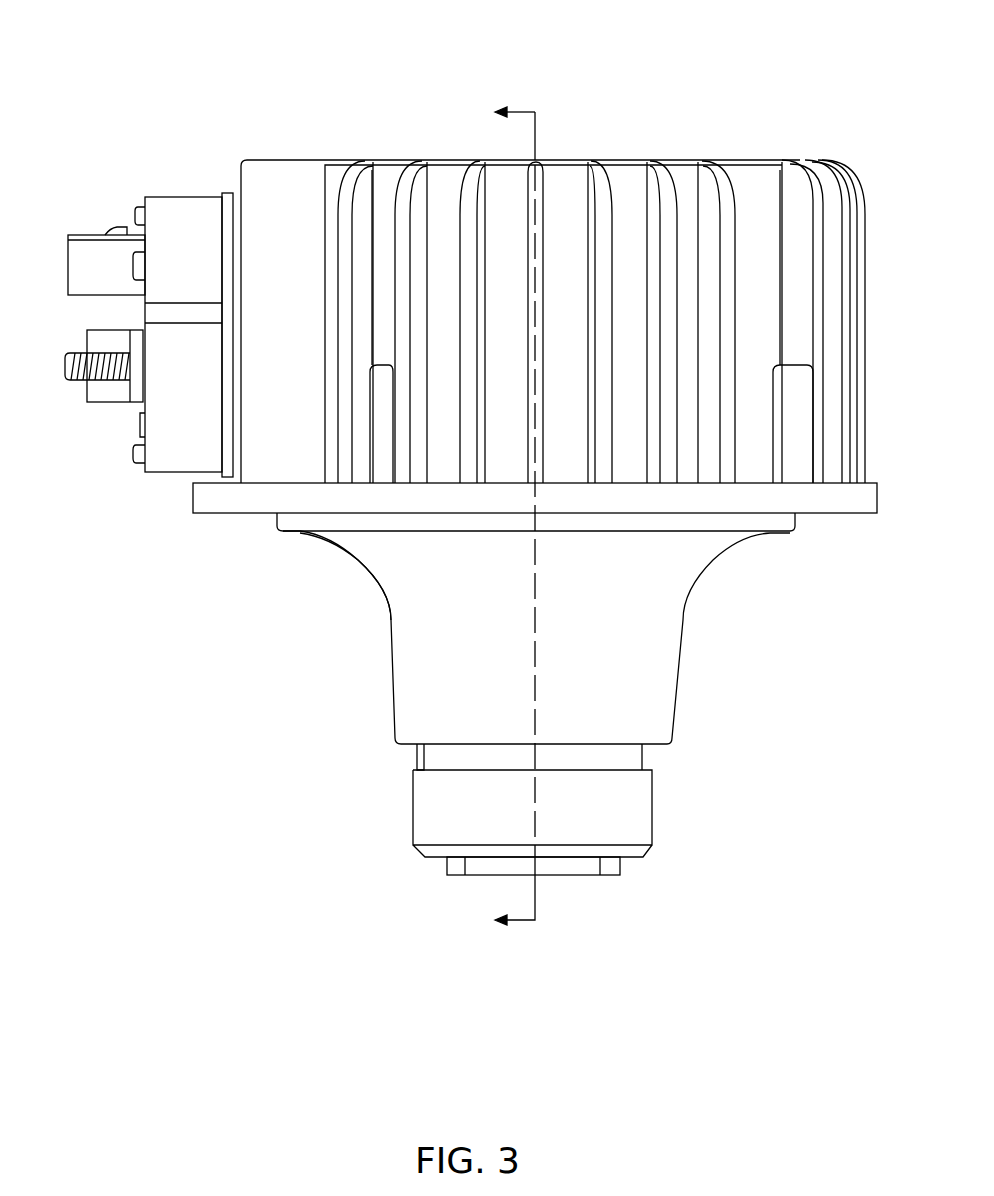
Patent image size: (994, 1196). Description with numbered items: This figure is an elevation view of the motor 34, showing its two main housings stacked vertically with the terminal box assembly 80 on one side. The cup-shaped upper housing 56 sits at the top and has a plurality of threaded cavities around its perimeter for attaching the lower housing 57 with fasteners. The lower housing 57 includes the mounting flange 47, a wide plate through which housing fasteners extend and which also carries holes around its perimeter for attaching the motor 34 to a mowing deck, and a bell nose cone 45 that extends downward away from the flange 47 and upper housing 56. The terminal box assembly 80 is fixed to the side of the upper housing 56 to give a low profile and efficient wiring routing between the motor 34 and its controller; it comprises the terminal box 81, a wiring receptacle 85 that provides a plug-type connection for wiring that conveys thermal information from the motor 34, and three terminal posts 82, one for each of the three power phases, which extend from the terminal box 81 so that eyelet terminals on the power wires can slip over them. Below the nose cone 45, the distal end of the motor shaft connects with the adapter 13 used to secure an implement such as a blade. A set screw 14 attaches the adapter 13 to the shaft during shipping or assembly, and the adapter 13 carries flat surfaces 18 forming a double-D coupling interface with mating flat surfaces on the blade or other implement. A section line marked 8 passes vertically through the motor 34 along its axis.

The motor 34 is at (140, 70).
The section line 8- 8 is at (504, 522).
The upper housing 56 is at (553, 321).
The mounting flange 47 is at (221, 516).
The lower housing 57 is at (536, 637).
The bell nose cone 45 is at (362, 560).
The adapter 13 is at (532, 800).
The set screw 14 is at (417, 758).
The flat surfaces 18 is at (562, 866).
The terminal box assembly 80 is at (102, 472).
The terminal box 81 is at (183, 335).
The terminal posts 82 is at (68, 380).
The wiring receptacle 85 is at (106, 261).